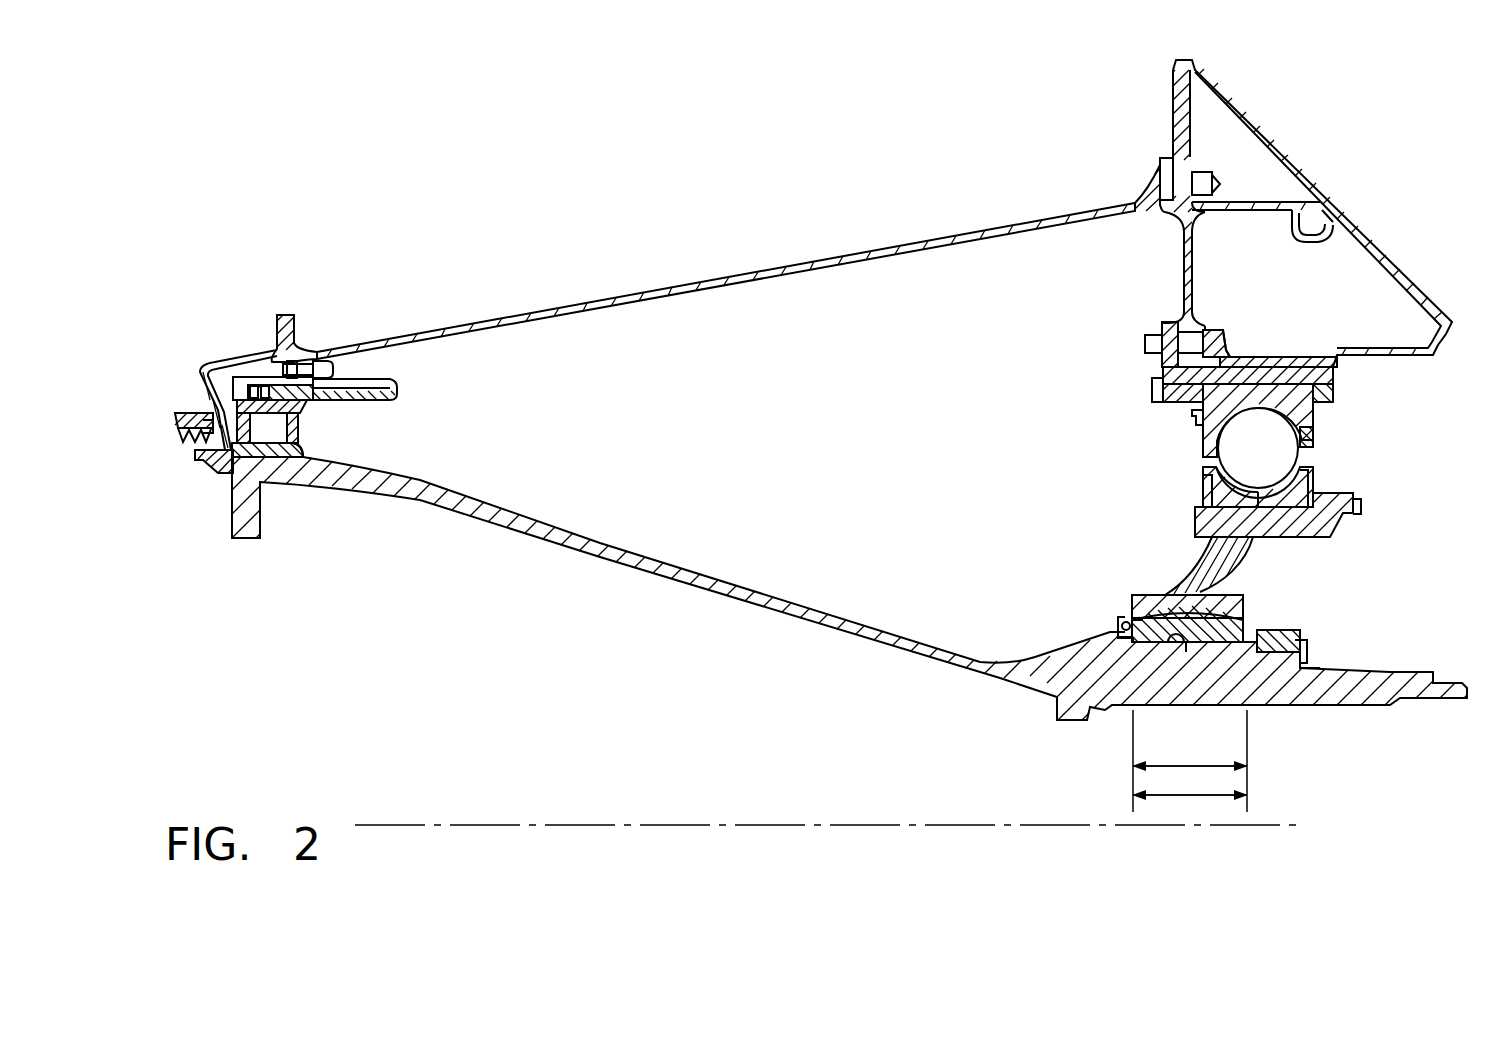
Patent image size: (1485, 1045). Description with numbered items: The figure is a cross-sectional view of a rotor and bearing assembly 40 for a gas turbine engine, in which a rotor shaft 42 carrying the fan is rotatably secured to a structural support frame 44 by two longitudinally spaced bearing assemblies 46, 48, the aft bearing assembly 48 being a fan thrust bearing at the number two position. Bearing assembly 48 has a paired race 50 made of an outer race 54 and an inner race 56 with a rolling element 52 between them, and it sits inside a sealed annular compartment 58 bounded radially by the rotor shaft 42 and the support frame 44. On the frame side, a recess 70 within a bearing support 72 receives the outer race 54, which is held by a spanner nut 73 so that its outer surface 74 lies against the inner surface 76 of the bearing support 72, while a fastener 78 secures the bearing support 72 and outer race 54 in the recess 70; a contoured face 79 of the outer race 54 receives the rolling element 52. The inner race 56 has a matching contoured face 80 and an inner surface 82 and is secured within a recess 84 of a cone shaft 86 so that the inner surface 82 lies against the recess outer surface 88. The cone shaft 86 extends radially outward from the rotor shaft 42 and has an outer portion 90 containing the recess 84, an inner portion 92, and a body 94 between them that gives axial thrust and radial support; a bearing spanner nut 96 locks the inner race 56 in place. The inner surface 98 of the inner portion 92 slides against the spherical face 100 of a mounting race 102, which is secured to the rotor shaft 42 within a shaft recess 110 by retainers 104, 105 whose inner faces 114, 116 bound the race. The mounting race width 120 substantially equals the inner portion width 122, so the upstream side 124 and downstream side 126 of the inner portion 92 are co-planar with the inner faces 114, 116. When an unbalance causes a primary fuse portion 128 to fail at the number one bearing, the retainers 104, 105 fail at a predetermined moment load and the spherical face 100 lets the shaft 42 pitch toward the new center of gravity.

The rotor and bearing assembly 40 is at (366, 183).
The rotor shaft 42 is at (640, 552).
The structural support frame 44 is at (1272, 352).
The bearing assembly 46 is at (249, 290).
The bearing assembly 48 is at (1115, 465).
The paired race 50 is at (1378, 410).
The rolling element 52 is at (1274, 461).
The outer race 54 is at (1318, 408).
The inner race 56 is at (1325, 490).
The sealed annular compartment 58 is at (1389, 588).
The recess 70 is at (1306, 440).
The bearing support 72 is at (1168, 335).
The spanner nut 73 is at (1158, 384).
The outer surface 74 is at (1330, 372).
The inner surface 76 is at (1320, 397).
The fastener 78 is at (1150, 345).
The face 79 is at (1212, 430).
The face 80 is at (1228, 478).
The inner surface 82 is at (1200, 523).
The recess 84 is at (1218, 486).
The cone shaft 86 is at (1200, 548).
The outer surface 88 is at (1308, 478).
The outer portion 90 is at (1345, 530).
The inner portion 92 is at (1243, 607).
The body 94 is at (1205, 560).
The bearing spanner nut 96 is at (1363, 511).
The inner surface 98 is at (1130, 622).
The face 100 is at (1165, 617).
The mounting race 102 is at (1220, 660).
The retainer 104 is at (1135, 634).
The retainer 105 is at (1262, 630).
The recess 110 is at (1190, 652).
The inner face 114 is at (1152, 645).
The inner face 116 is at (1275, 668).
The width 120 is at (1175, 766).
The width 122 is at (1202, 795).
The upstream side 124 is at (1125, 620).
The downstream side 126 is at (1245, 597).
The primary fuse portion 128 is at (658, 290).